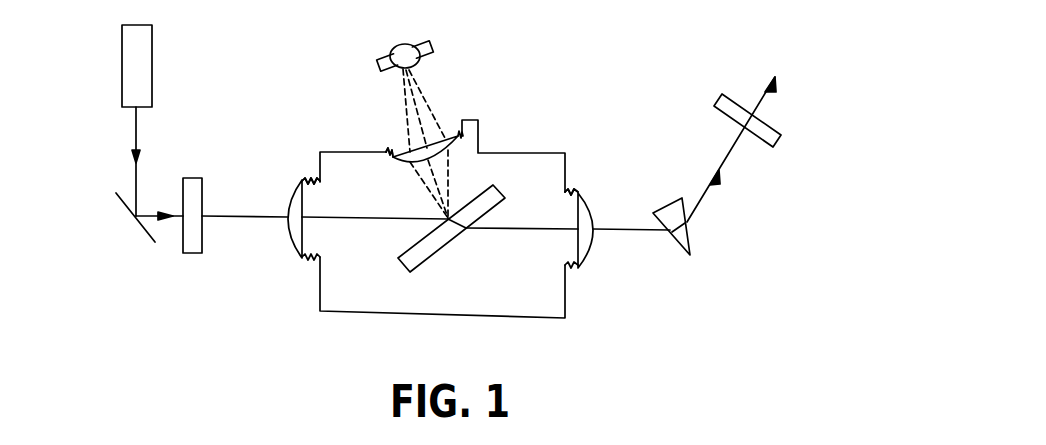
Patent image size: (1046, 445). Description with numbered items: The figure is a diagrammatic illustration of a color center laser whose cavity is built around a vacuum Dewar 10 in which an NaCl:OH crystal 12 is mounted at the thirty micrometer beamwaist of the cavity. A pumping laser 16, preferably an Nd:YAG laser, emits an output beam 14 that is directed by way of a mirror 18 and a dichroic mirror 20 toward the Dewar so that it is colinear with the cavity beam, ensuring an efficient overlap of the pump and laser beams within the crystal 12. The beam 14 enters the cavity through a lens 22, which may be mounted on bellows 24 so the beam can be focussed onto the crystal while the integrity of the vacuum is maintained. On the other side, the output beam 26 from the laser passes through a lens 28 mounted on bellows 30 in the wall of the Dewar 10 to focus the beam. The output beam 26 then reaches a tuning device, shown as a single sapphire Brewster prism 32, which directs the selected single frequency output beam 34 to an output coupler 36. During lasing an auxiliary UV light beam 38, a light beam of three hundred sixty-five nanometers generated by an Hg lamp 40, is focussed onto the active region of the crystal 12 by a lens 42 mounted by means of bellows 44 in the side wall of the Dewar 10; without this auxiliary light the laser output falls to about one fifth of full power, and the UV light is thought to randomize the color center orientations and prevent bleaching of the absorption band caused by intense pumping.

The vacuum Dewar 10 is at (398, 318).
The NaCl:OH crystal 12 is at (403, 278).
The output beam 14 is at (133, 182).
The pumping laser 16 is at (130, 68).
The mirror 18 is at (120, 208).
The dichroic mirror 20 is at (202, 240).
The lens 22 is at (292, 260).
The bellows 24 is at (308, 180).
The output beam 26 is at (622, 233).
The lens 28 is at (593, 215).
The bellows 30 is at (573, 267).
The sapphire Brewster prism 32 is at (693, 243).
The single frequency output beam 34 is at (728, 158).
The output coupler 36 is at (781, 131).
The auxiliary UV light beam 38 is at (405, 107).
The Hg lamp 40 is at (420, 37).
The lens 42 is at (407, 163).
The bellows 44 is at (395, 150).